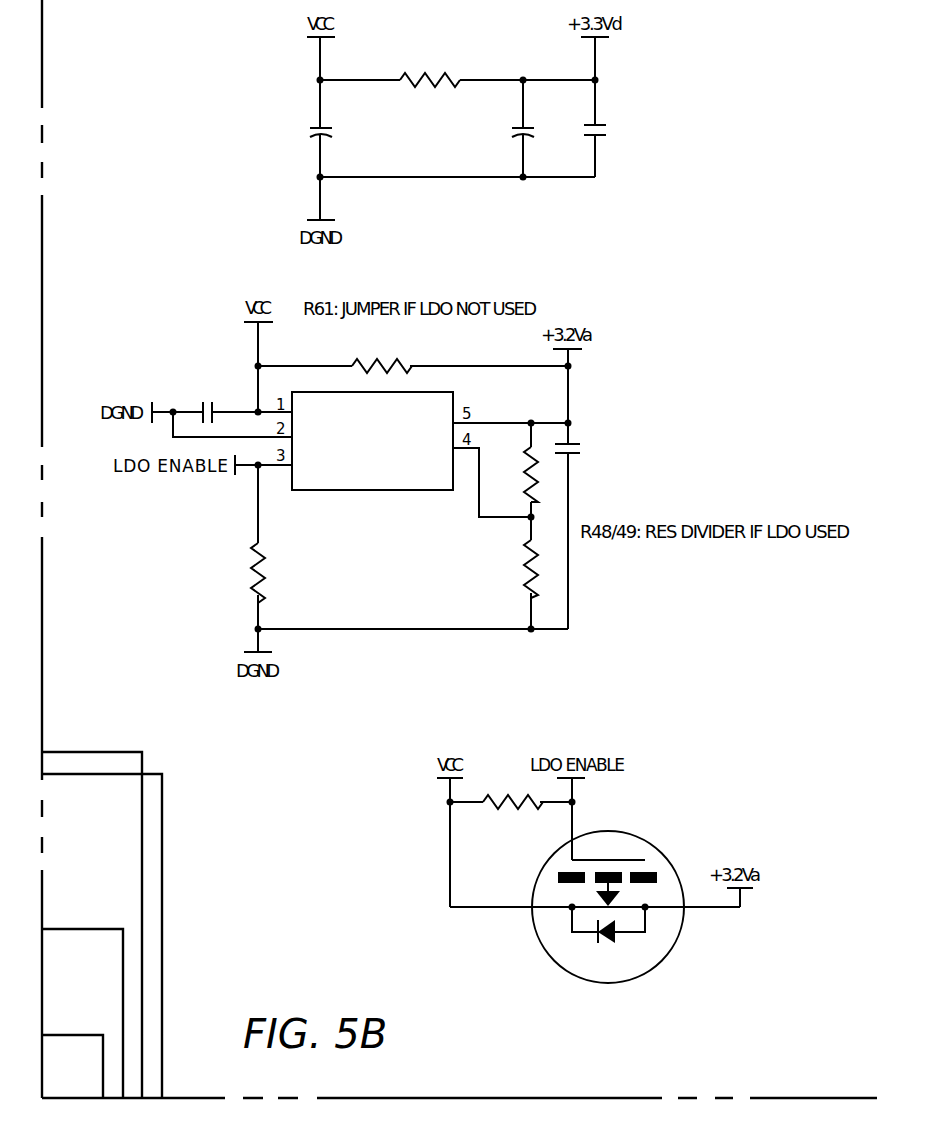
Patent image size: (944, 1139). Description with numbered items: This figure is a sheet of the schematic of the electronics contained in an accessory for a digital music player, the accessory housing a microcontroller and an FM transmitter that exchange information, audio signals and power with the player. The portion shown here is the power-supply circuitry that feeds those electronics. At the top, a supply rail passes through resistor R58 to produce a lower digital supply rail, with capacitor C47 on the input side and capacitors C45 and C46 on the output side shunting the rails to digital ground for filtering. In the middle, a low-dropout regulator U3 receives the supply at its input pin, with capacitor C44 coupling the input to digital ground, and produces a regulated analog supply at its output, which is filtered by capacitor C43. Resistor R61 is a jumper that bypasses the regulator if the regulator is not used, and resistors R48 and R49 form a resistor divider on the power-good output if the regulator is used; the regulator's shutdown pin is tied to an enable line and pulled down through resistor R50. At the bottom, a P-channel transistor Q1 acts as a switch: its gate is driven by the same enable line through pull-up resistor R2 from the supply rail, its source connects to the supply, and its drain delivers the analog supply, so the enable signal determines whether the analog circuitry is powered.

The resistor R58 10R R58 is at (430, 77).
The capacitor C47 220uF 6.3V C47 is at (267, 128).
The capacitor C45 220uF 6.3V C45 is at (486, 128).
The capacitor C46 .01uF C46 is at (616, 128).
The LDO regulator U3 LP39851M5-3.2 U3 is at (372, 444).
The resistor R61 NC jumper R61 is at (381, 355).
The capacitor C44 1uF C44 is at (212, 400).
The resistor R50 10K R50 is at (278, 573).
The resistor R48 NC R48 is at (511, 474).
The resistor R49 NC R49 is at (510, 569).
The capacitor C43 1uF C43 is at (586, 452).
The resistor R2 10K R2 is at (513, 802).
The P-channel MOSFET Q1 ZNM61P03P Q1 is at (610, 906).